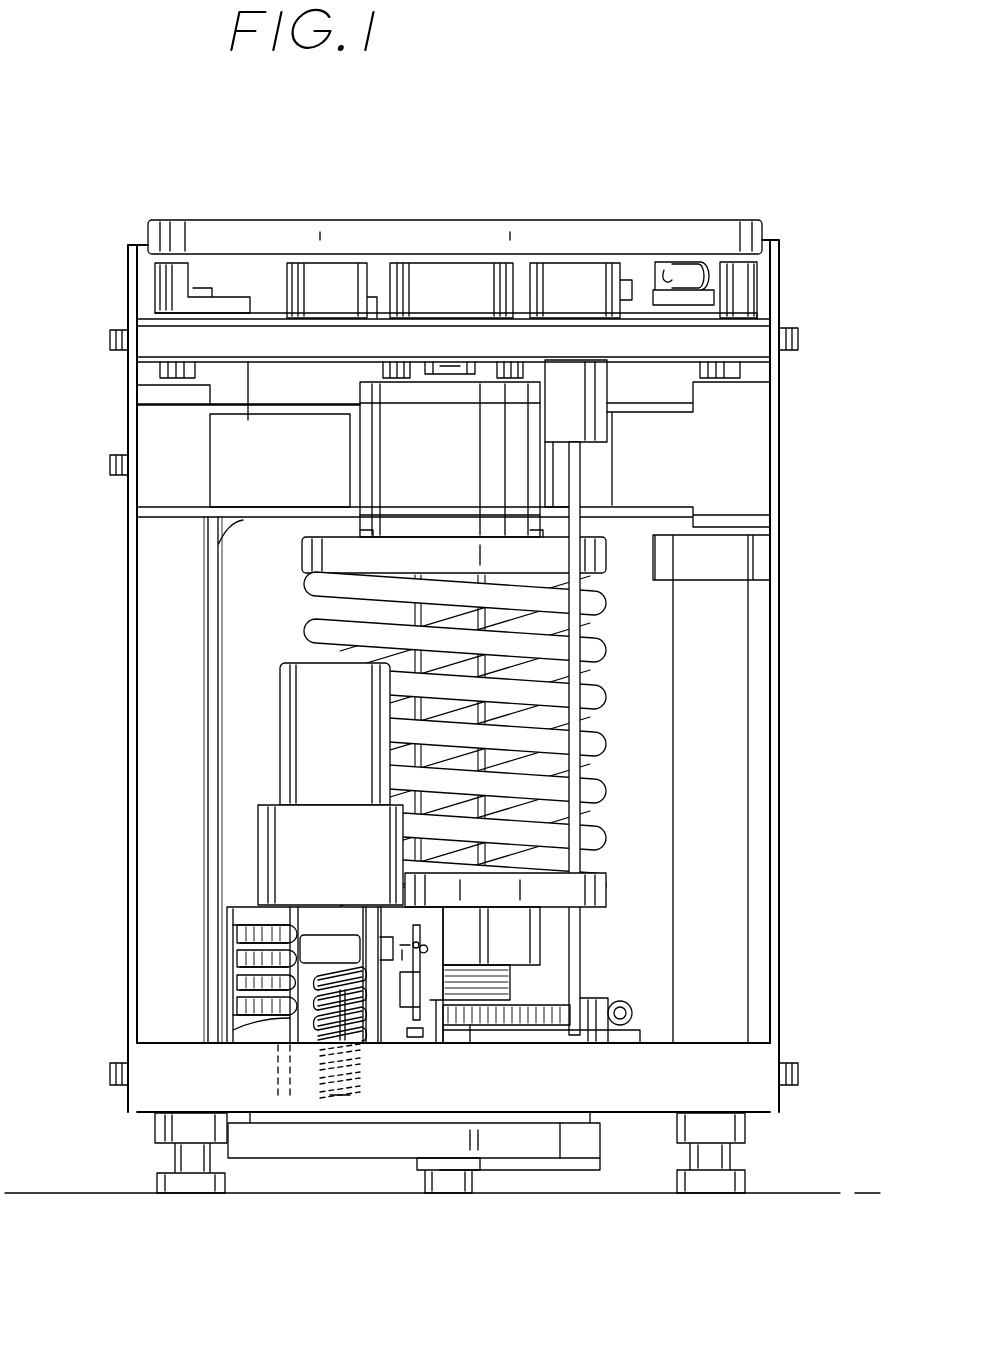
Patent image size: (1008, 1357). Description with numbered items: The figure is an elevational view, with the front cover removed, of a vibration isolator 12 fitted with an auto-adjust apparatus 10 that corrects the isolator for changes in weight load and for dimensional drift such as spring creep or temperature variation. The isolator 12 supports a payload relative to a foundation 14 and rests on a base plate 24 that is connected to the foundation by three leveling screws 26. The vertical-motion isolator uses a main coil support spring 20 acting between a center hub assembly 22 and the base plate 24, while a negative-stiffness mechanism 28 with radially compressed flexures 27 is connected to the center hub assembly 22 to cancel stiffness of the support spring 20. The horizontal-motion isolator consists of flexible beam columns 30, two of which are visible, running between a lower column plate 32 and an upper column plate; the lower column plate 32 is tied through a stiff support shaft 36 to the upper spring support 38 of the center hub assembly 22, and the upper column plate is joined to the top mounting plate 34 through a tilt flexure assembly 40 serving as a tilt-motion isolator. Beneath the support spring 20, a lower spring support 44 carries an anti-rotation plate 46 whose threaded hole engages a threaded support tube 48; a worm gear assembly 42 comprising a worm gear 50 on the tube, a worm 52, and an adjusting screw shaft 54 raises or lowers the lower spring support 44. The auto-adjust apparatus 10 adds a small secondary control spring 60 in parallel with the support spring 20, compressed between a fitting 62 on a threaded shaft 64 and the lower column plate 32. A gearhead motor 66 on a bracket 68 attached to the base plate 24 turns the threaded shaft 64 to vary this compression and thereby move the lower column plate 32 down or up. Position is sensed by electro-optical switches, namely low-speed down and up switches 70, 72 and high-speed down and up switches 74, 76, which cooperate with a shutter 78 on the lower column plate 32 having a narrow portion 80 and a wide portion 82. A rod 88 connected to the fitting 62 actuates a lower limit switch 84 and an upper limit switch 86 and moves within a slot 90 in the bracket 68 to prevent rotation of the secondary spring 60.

The auto-adjust apparatus 10 is at (451, 623).
The vibration isolator 12 is at (492, 591).
The foundation 14 is at (826, 1192).
The support spring 20 is at (600, 602).
The center hub assembly 22 is at (390, 486).
The base plate 24 is at (790, 1111).
The leveling screws 26 is at (170, 1178).
The flexures 27 is at (235, 406).
The negative-stiffness mechanism 28 is at (793, 402).
The flexible beam columns 30 is at (215, 701).
The lower column plate 32 is at (240, 1150).
The top mounting plate 34 is at (200, 220).
The stiff support shaft 36 is at (460, 688).
The upper spring support 38 is at (305, 556).
The tilt flexure assembly 40 is at (516, 278).
The worm gear assembly 42 is at (575, 1040).
The lower spring support 44 is at (605, 891).
The plate 46 is at (545, 935).
The threaded support tube 48 is at (520, 990).
The worm gear 50 is at (505, 1030).
The worm 52 is at (640, 1009).
The adjusting screw shaft 54 is at (630, 1035).
The secondary control spring 60 is at (340, 1098).
The fitting 62 is at (300, 951).
The threaded shaft 64 is at (335, 936).
The gearhead motor 66 is at (280, 676).
The bracket 68 is at (355, 950).
The low-speed down switch 70 is at (240, 991).
The low-speed up switch 72 is at (280, 1001).
The high-speed down switch 74 is at (167, 947).
The high-speed up switch 76 is at (240, 961).
The shutter 78 is at (285, 1002).
The narrow portion 80 is at (285, 1011).
The wide portion 82 is at (300, 1001).
The lower limit switch 84 is at (385, 1010).
The upper limit switch 86 is at (443, 998).
The rod 88 is at (405, 955).
The slot 90 is at (455, 1030).